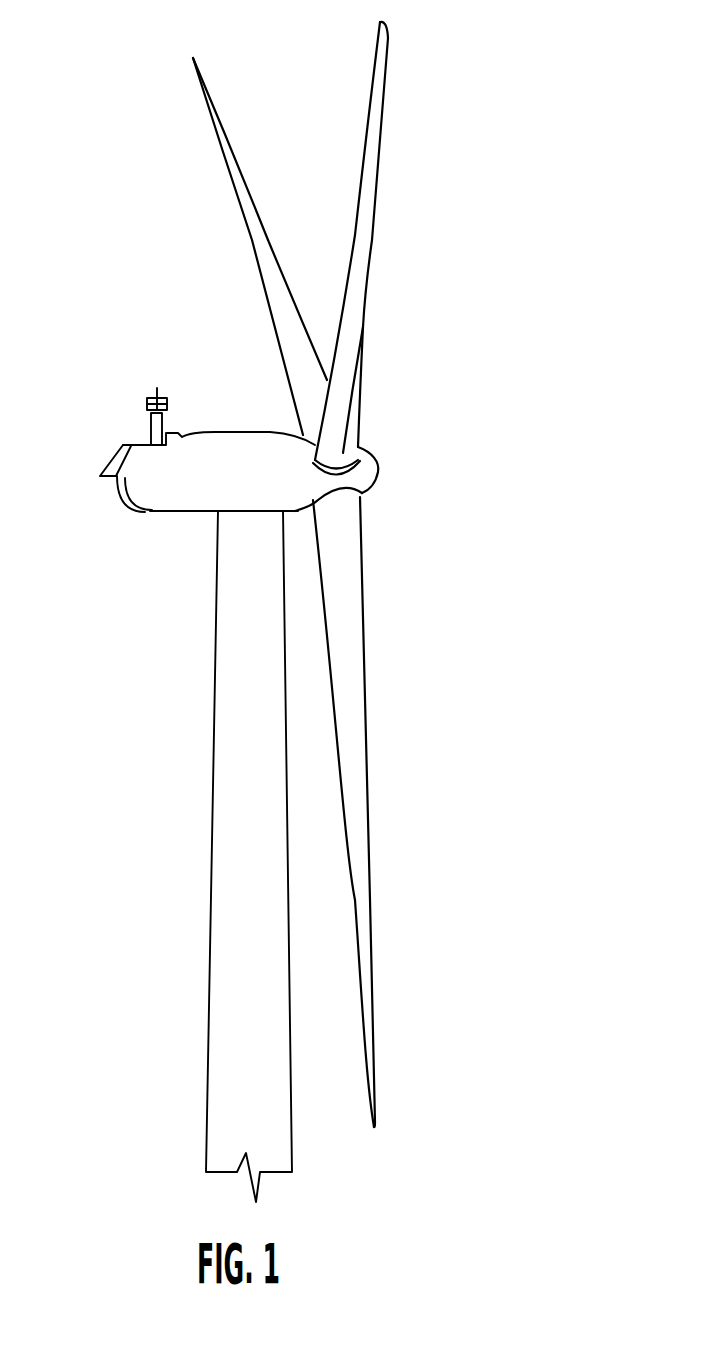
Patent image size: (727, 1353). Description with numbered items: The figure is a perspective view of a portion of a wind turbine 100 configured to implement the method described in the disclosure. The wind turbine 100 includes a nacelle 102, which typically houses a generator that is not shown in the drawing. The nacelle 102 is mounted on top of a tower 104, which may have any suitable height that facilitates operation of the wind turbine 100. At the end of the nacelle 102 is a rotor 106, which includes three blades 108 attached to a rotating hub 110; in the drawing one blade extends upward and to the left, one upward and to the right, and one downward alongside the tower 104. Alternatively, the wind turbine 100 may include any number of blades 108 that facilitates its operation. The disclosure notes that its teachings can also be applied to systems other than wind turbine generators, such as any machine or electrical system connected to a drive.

The wind turbine 100 is at (110, 196).
The nacelle 102 is at (175, 516).
The tower 104 is at (210, 950).
The rotor 106 is at (528, 329).
The blades 108 is at (259, 220).
The rotating hub 110 is at (378, 468).